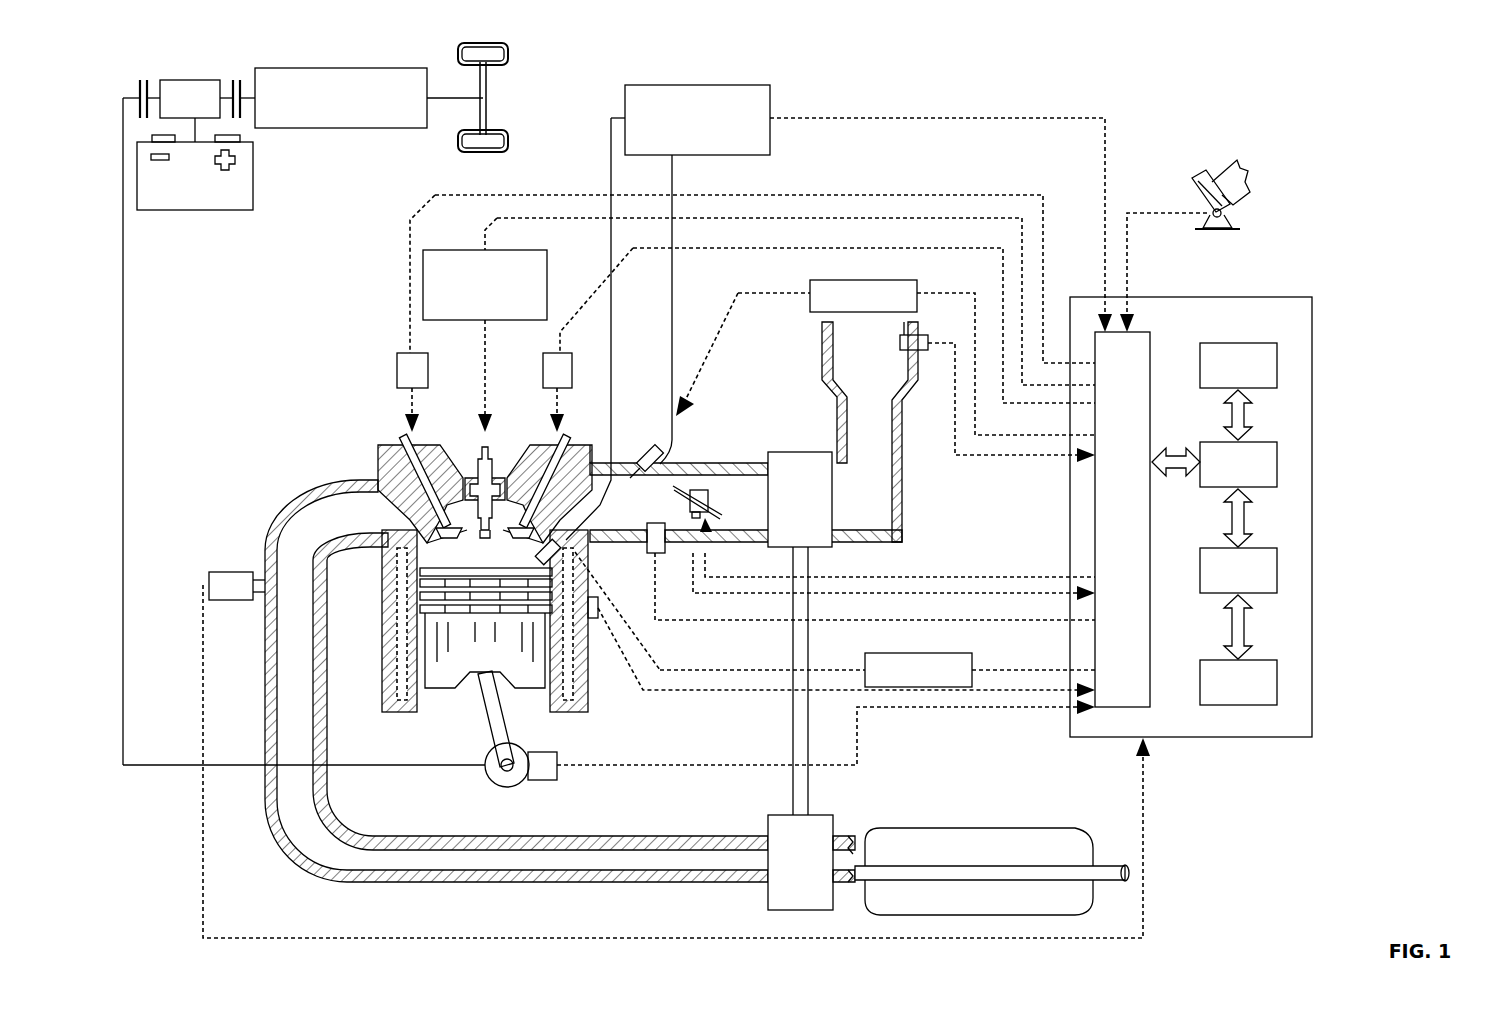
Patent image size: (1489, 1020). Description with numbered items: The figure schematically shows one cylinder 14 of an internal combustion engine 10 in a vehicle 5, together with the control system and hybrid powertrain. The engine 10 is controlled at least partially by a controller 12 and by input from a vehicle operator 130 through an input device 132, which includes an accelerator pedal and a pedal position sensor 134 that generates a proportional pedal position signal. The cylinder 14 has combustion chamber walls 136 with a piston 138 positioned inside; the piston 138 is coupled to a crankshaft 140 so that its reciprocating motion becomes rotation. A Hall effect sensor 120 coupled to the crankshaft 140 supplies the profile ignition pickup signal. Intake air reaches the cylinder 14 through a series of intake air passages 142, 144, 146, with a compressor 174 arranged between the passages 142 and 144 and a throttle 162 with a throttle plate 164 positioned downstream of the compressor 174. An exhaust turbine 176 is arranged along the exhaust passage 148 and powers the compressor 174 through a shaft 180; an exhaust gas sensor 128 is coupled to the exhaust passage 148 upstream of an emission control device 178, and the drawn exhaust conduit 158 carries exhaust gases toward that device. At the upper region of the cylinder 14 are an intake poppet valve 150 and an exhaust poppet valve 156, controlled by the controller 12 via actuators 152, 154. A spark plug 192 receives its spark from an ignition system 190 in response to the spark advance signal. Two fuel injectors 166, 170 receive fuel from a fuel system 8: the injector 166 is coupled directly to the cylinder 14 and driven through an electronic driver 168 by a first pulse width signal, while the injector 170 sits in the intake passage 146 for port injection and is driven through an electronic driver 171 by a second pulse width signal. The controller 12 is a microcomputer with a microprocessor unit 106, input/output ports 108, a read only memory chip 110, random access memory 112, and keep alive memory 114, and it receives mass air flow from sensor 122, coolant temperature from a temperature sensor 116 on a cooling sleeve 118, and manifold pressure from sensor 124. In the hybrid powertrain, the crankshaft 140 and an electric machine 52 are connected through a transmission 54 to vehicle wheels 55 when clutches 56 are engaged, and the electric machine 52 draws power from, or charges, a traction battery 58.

The vehicle 5 is at (1362, 110).
The fuel system 8 is at (735, 85).
The internal combustion engine 10 is at (298, 388).
The controller 12 is at (1312, 300).
The cylinder 14 is at (460, 621).
The electric machine 52 is at (197, 80).
The transmission 54 is at (403, 128).
The vehicle wheels 55 is at (486, 152).
The clutch 56 is at (140, 92).
The traction battery 58 is at (190, 210).
The microprocessor unit 106 is at (1277, 462).
The input/output ports 108 is at (1152, 340).
The read only memory chip 110 is at (1277, 362).
The random access memory 112 is at (1277, 572).
The keep alive memory 114 is at (1277, 682).
The temperature sensor 116 is at (604, 690).
The cooling sleeve 118 is at (587, 688).
The Hall effect sensor 120 is at (546, 780).
The mass air flow sensor 122 is at (926, 340).
The manifold pressure sensor 124 is at (661, 560).
The exhaust gas sensor 128 is at (209, 577).
The vehicle operator 130 is at (1248, 178).
The input device 132 is at (1197, 192).
The pedal position sensor 134 is at (1226, 213).
The combustion chamber walls 136 is at (423, 712).
The piston 138 is at (468, 657).
The crankshaft 140 is at (497, 786).
The intake air passage 142 is at (948, 478).
The intake air passage 144 is at (746, 493).
The intake air passage 146 is at (653, 501).
The exhaust passage 148 is at (540, 669).
The intake poppet valve 150 is at (500, 478).
The actuator 152 is at (543, 366).
The actuator 154 is at (397, 362).
The exhaust poppet valve 156 is at (385, 487).
The exhaust passage 158 is at (606, 884).
The throttle 162 is at (716, 492).
The throttle plate 164 is at (694, 488).
The fuel injector 166 is at (552, 532).
The electronic driver 168 is at (865, 660).
The fuel injector 170 is at (648, 450).
The electronic driver 171 is at (812, 284).
The compressor 174 is at (800, 499).
The exhaust turbine 176 is at (811, 862).
The emission control device 178 is at (1055, 840).
The shaft 180 is at (810, 776).
The ignition system 190 is at (430, 250).
The spark plug 192 is at (478, 468).